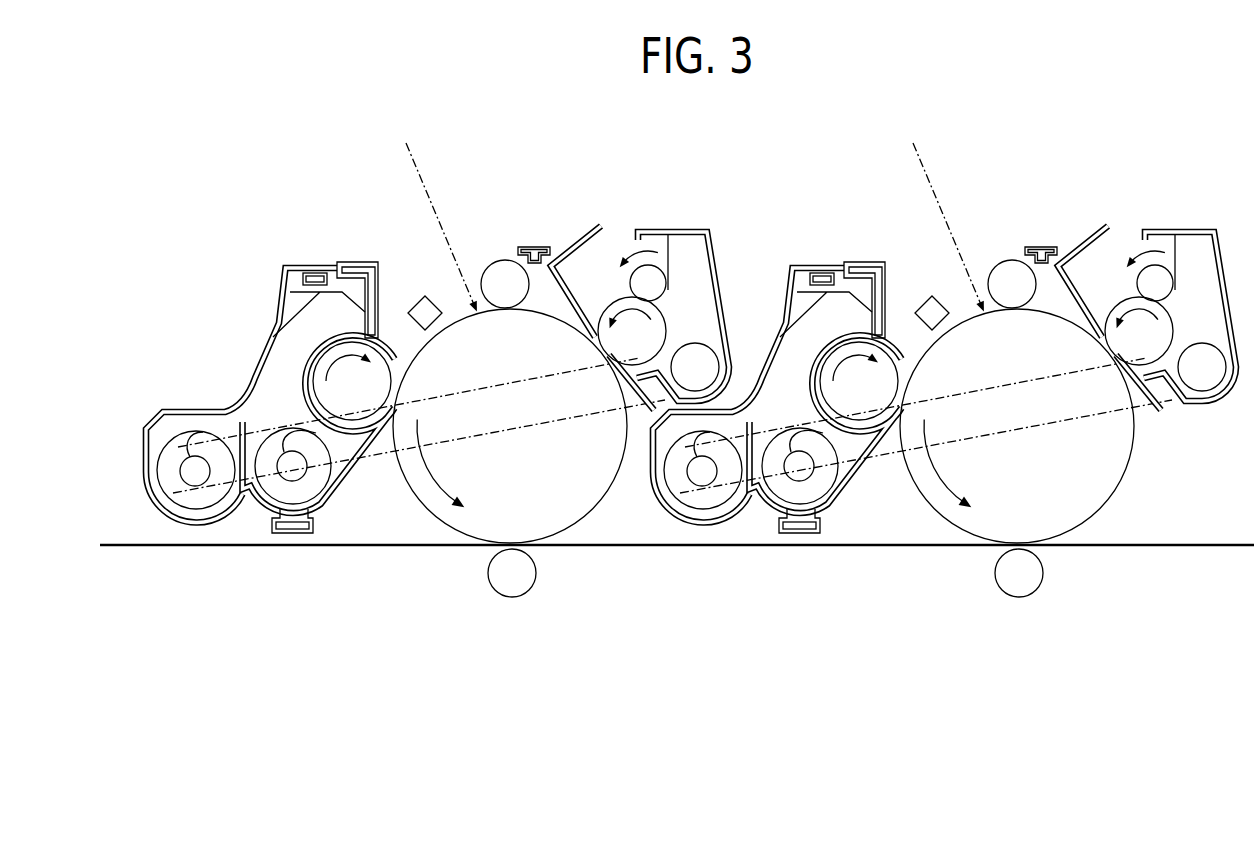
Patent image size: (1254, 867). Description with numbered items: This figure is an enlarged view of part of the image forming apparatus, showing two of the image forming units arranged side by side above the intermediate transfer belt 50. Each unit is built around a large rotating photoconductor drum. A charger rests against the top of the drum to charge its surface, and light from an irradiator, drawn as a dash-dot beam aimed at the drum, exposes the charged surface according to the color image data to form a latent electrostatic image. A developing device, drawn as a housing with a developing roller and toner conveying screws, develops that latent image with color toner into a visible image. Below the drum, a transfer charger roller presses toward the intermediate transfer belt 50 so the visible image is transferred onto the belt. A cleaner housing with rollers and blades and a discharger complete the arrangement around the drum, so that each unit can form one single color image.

The intermediate transfer belt 50 is at (619, 548).